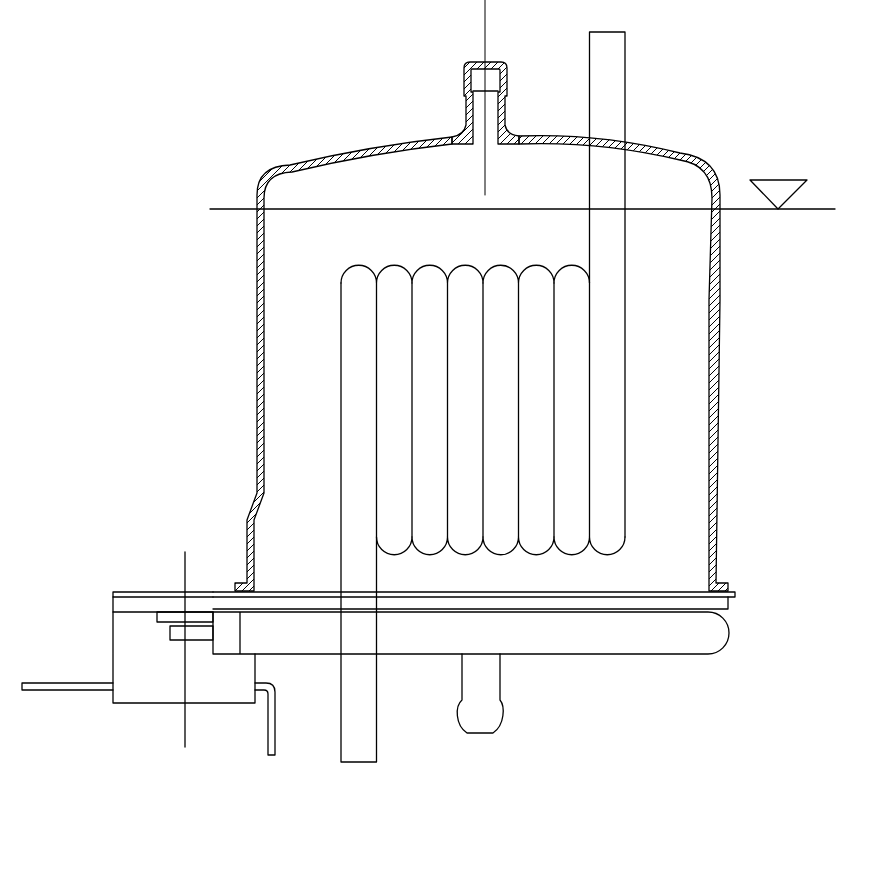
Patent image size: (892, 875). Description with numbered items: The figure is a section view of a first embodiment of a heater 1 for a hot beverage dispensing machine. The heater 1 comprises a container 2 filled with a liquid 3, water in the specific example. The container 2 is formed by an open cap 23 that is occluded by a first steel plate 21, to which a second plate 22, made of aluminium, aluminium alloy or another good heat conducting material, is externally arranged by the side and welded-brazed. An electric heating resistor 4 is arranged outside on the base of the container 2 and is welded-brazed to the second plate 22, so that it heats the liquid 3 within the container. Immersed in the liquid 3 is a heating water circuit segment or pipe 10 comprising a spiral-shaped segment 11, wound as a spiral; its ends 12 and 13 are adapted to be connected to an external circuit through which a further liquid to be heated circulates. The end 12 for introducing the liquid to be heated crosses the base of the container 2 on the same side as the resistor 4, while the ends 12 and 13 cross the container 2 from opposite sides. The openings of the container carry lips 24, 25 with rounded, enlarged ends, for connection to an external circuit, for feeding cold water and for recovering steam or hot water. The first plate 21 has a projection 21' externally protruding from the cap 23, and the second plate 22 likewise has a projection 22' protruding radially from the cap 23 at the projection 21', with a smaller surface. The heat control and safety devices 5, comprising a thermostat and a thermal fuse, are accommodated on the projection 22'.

The heater 1 is at (188, 76).
The container 2 is at (224, 334).
The liquid 3 is at (675, 208).
The electric heating resistor 4 is at (663, 642).
The heat control and safety devices 5 is at (146, 710).
The heating water circuit segment 10 is at (646, 100).
The spiral-shaped segment 11 is at (603, 420).
The end for introducing the liquid to be heated 12 is at (353, 752).
The end of the heating water circuit segment 13 is at (620, 50).
The first plate 21 is at (515, 576).
The projection of the first plate 21' is at (163, 557).
The second plate 22 is at (509, 630).
The projection of the second plate 22' is at (133, 580).
The open cap 23 is at (719, 378).
The lip 24 is at (505, 72).
The lip 25 is at (490, 715).